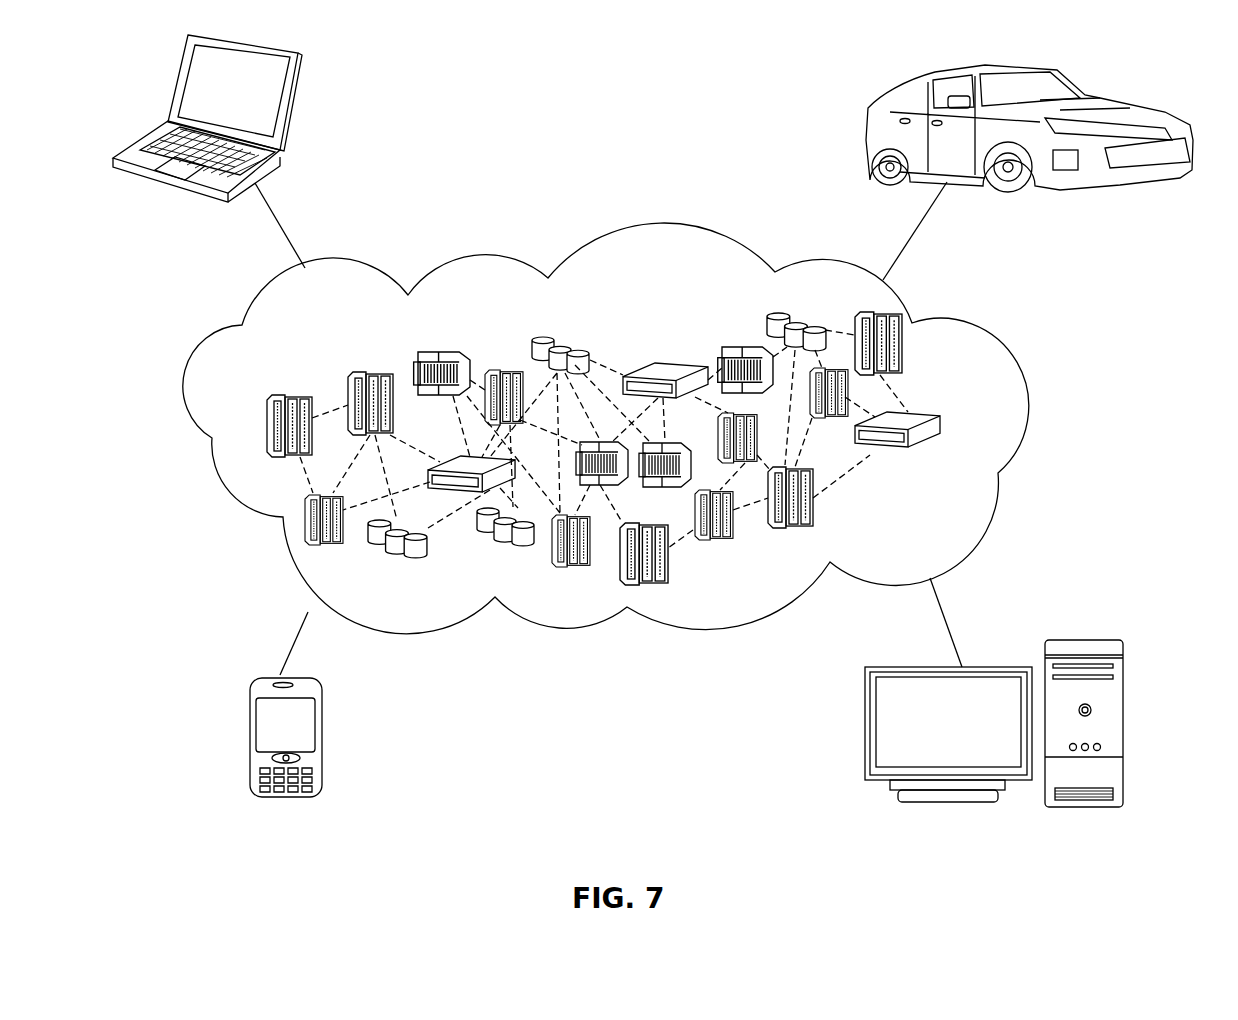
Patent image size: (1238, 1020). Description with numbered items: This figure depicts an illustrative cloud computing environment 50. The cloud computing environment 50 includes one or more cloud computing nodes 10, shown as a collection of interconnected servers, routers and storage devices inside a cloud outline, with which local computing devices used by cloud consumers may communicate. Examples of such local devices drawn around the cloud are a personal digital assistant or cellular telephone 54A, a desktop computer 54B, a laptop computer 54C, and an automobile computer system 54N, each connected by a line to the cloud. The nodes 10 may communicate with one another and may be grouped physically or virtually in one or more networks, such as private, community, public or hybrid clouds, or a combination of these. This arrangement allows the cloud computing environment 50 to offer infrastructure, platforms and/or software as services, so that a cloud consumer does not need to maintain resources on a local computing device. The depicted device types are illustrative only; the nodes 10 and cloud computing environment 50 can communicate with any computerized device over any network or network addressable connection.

The cloud computing node 10 is at (979, 427).
The cloud computing environment 50 is at (1003, 340).
The personal digital assistant or cellular telephone 54A is at (248, 742).
The desktop computer 54B is at (1085, 640).
The laptop computer 54C is at (292, 105).
The automobile computer system 54N is at (875, 110).